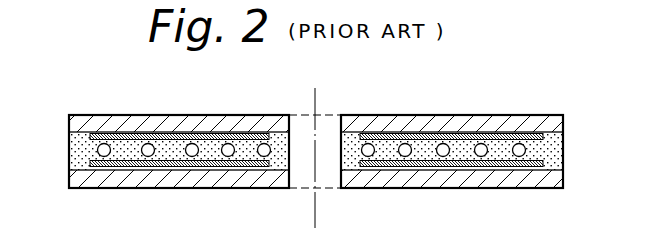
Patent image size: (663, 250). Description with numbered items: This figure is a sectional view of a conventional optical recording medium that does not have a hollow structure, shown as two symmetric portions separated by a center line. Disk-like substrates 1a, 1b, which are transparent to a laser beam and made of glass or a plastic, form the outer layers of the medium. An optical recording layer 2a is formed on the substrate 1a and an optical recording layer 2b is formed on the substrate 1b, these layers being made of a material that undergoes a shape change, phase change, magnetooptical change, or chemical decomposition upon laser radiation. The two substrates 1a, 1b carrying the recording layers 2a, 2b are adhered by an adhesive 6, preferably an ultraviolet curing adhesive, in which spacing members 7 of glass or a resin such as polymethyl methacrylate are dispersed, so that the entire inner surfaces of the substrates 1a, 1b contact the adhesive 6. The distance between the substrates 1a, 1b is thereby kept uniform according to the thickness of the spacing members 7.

The substrate 1a is at (84, 176).
The substrate 1b is at (78, 123).
The optical recording layer 2a is at (152, 162).
The optical recording layer 2b is at (145, 134).
The adhesive 6 is at (80, 148).
The spacing member 7 is at (232, 158).